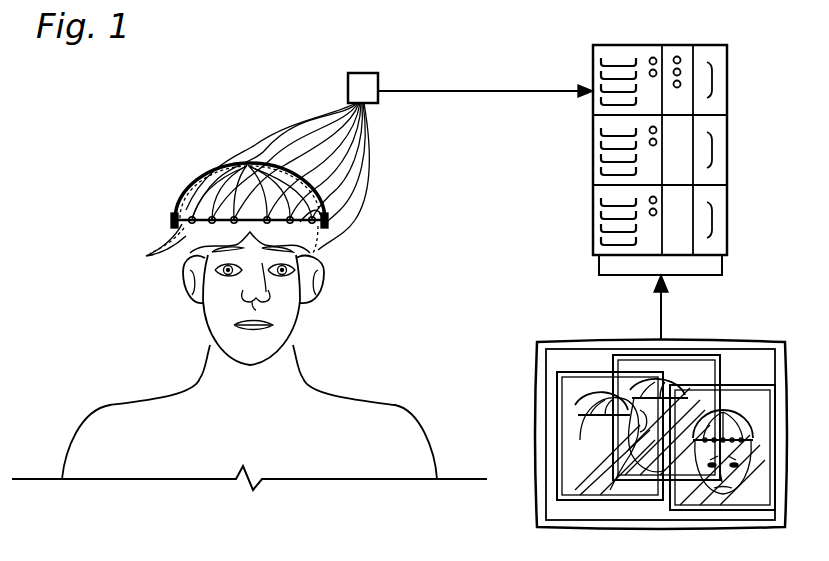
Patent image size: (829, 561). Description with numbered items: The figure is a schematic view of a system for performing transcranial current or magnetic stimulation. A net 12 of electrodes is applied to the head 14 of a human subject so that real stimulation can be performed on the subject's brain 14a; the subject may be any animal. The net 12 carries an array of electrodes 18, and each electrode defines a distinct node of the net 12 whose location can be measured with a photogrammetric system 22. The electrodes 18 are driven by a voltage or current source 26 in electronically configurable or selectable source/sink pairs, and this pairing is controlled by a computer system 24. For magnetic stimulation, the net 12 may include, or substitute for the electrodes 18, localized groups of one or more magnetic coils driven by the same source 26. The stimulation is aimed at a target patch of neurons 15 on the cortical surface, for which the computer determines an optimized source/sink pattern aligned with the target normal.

The net 12 is at (186, 200).
The head 14 is at (358, 229).
The brain 14a is at (205, 272).
The target patch of neurons 15 is at (218, 172).
The electrodes 18 is at (146, 255).
The photogrammetric system 22 is at (742, 340).
The computer system 24 is at (685, 45).
The source 26 is at (366, 73).